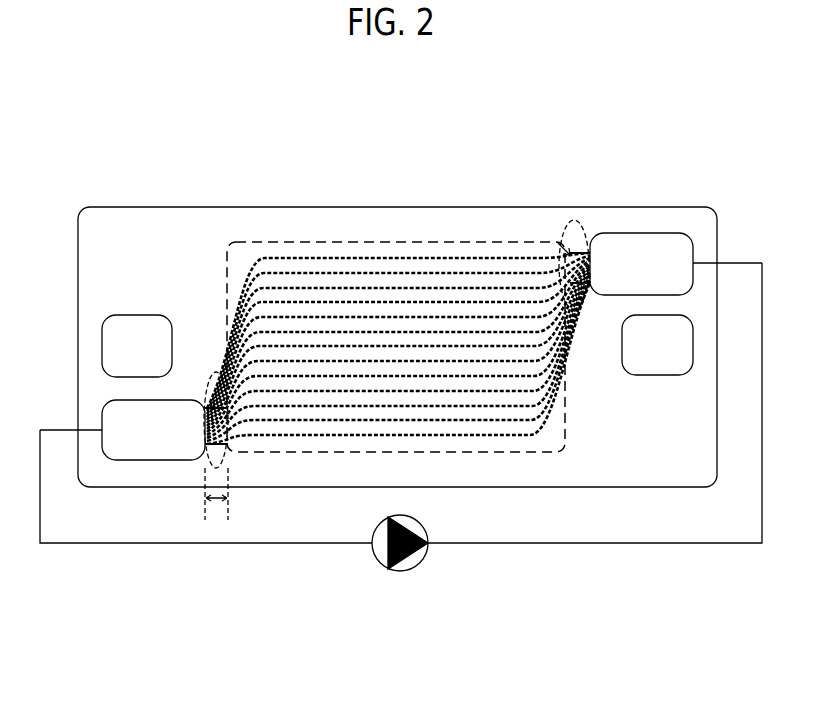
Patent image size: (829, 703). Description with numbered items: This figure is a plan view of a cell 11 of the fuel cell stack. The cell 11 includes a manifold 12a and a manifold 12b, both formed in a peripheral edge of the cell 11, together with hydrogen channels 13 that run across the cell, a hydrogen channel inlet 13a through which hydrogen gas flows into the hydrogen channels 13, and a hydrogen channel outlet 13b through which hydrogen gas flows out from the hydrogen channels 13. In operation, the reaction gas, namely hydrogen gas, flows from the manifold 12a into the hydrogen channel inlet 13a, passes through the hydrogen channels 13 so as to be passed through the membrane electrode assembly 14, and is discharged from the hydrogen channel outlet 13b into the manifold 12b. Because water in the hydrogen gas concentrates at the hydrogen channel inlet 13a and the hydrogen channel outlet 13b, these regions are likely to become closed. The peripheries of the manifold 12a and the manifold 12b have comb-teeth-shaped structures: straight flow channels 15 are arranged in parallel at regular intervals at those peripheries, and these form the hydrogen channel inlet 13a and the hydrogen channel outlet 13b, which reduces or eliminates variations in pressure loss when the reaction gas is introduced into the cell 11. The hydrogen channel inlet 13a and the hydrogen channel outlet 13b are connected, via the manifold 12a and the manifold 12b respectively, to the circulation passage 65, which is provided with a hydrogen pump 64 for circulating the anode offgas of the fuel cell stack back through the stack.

The cell 11 is at (683, 197).
The manifold 12a is at (693, 245).
The manifold 12b is at (100, 421).
The hydrogen channels 13 is at (412, 268).
The hydrogen channel inlet 13a is at (568, 222).
The hydrogen channel outlet 13b is at (207, 385).
The membrane electrode assembly 14 is at (494, 240).
The straight flow channels 15 is at (205, 414).
The hydrogen pump 64 is at (421, 569).
The circulation passage 65 is at (762, 633).